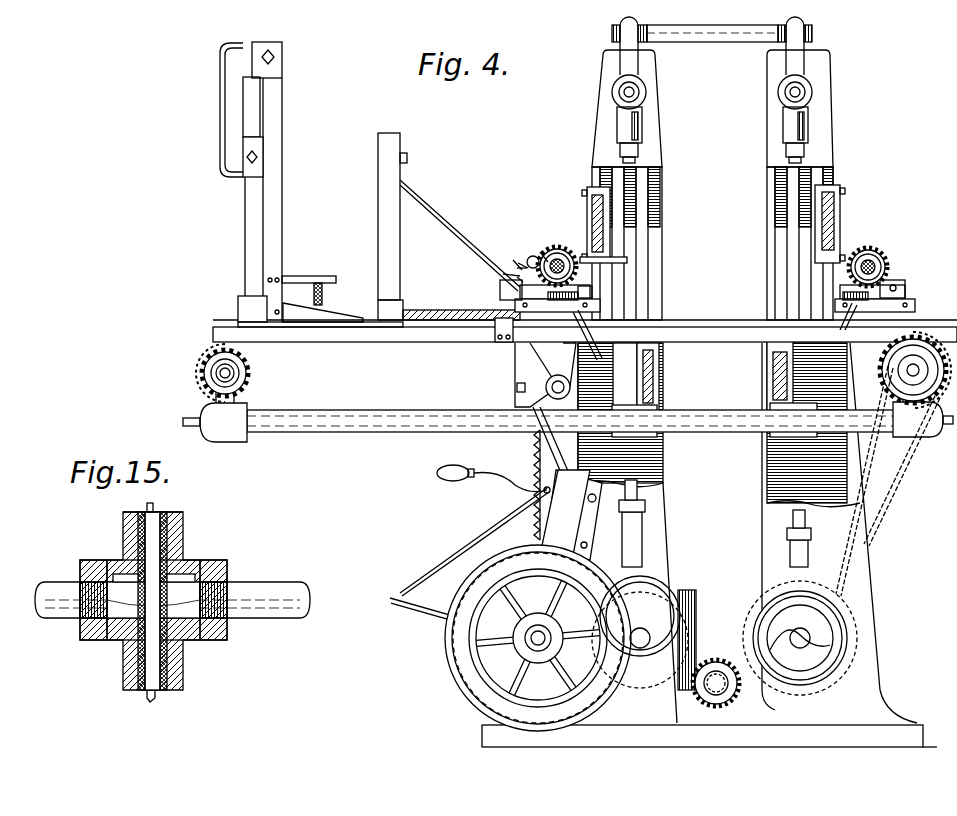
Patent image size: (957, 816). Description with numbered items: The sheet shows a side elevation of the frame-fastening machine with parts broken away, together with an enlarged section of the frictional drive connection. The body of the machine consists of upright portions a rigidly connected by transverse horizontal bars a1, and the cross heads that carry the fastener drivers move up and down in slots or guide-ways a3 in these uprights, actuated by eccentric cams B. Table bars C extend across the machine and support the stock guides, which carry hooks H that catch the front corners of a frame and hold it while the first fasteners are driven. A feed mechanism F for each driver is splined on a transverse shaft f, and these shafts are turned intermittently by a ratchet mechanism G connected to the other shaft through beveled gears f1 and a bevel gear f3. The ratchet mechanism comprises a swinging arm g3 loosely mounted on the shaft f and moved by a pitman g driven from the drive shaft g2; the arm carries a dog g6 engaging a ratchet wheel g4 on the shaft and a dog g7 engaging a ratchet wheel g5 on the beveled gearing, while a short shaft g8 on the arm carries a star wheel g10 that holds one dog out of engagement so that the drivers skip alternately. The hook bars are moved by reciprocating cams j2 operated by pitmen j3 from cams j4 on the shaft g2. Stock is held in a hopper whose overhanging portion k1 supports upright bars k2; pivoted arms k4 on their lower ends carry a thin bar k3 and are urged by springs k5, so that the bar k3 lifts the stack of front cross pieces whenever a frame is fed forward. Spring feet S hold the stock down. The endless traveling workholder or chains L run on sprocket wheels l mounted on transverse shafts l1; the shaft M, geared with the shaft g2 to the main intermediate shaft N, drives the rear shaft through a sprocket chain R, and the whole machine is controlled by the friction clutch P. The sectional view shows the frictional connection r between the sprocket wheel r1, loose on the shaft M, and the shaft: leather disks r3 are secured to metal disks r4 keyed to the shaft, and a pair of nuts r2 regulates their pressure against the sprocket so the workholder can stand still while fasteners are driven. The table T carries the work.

In FIG. 4, the overhanging portion k1 is at (235, 131).
In FIG. 4, the upright bars k2 is at (283, 222).
In FIG. 4, the thin bar k3 is at (362, 327).
In FIG. 4, the pivoted arms k4 is at (310, 322).
In FIG. 4, the springs k5 is at (332, 292).
In FIG. 4, the spring feet or pressing devices S is at (450, 317).
In FIG. 4, the endless traveling workholder or chains L is at (198, 364).
In FIG. 4, the sprocket wheels l is at (255, 385).
In FIG. 4, the transverse shafts l1 is at (217, 372).
In FIG. 4, the swinging or reciprocating arm g3 is at (510, 272).
In FIG. 4, the ratchet wheel g4 is at (503, 274).
In FIG. 4, the star wheel g10 is at (517, 277).
In FIG. 4, the short shaft g8 is at (517, 268).
In FIG. 4, the dog g7 is at (513, 260).
In FIG. 4, the dog g6 is at (518, 263).
In FIG. 4, the ratchet wheel g5 is at (542, 252).
In FIG. 4, the ratchet mechanism G is at (570, 252).
In FIG. 4, the upright portions a is at (654, 155).
In FIG. 4, the transverse horizontal bars a1 is at (597, 213).
In FIG. 4, the slots or guide-ways a3 is at (627, 70).
In FIG. 4, the transverse shafts f is at (577, 289).
In FIG. 4, the beveled gears f1 is at (580, 276).
In FIG. 4, the bevel gear f3 is at (875, 257).
In FIG. 4, the table T is at (585, 321).
In FIG. 4, the feed mechanism F is at (573, 303).
In FIG. 4, the table bars C is at (653, 387).
In FIG. 4, the reciprocating cams j2 is at (517, 352).
In FIG. 4, the pitman g is at (543, 357).
In FIG. 4, the pitmen j3 is at (550, 456).
In FIG. 4, the cams j4 is at (578, 727).
In FIG. 4, the friction clutch P is at (467, 695).
In FIG. 4, the drive shaft g2 is at (640, 648).
In FIG. 4, the eccentric cams B is at (640, 568).
In FIG. 4, the hooks H is at (667, 542).
In FIG. 4, the main intermediate shaft N is at (716, 675).
In FIG. 4, the sprocket chain R is at (890, 497).
In FIG. 4, the shaft M is at (803, 640).
In FIG. 15, the shaft M is at (270, 587).
In FIG. 15, the slippage or frictional connection r is at (183, 560).
In FIG. 15, the sprocket wheel r1 is at (153, 512).
In FIG. 15, the nuts r2 is at (87, 563).
In FIG. 15, the leather disks r3 is at (152, 700).
In FIG. 15, the metal disks r4 is at (123, 518).